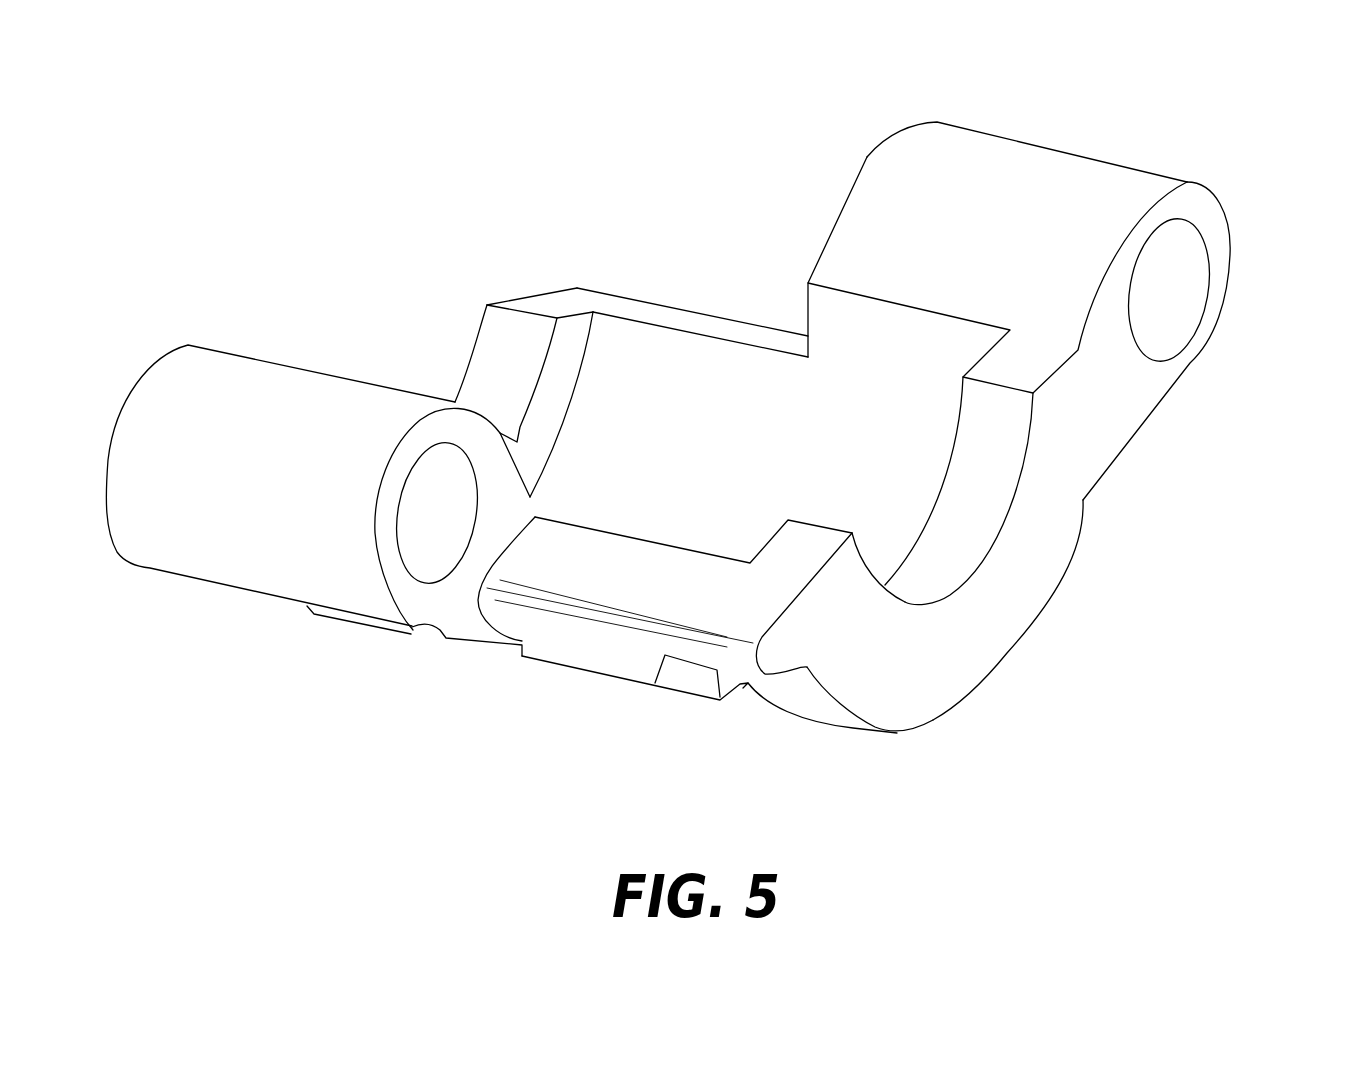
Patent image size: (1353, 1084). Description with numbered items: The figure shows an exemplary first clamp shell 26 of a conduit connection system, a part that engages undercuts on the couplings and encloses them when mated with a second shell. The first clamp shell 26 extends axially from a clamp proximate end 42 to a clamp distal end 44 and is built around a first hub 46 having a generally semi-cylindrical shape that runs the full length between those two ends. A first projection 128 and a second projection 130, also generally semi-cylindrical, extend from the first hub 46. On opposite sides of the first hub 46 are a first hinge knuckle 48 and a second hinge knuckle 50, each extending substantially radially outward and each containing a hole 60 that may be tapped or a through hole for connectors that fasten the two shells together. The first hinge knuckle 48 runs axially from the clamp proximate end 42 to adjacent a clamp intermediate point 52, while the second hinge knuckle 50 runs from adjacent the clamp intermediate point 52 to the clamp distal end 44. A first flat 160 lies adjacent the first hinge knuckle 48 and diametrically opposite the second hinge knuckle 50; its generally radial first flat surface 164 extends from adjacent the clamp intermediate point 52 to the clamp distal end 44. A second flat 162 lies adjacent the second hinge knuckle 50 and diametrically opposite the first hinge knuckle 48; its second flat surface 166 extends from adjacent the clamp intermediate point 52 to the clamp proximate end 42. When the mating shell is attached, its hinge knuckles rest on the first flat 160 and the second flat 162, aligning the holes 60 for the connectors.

The first clamp shell 26 is at (957, 695).
The clamp proximate end 42 is at (449, 357).
The clamp distal end 44 is at (1062, 606).
The first hub 46 is at (749, 456).
The first hinge knuckle 48 is at (215, 555).
The second hinge knuckle 50 is at (1105, 185).
The clamp intermediate point 52 is at (836, 245).
The hole 60 is at (420, 583).
The first projection 128 is at (490, 335).
The second projection 130 is at (1003, 500).
The first flat 160 is at (663, 589).
The second flat 162 is at (663, 315).
The first flat surface 164 is at (765, 592).
The second flat surface 166 is at (548, 302).